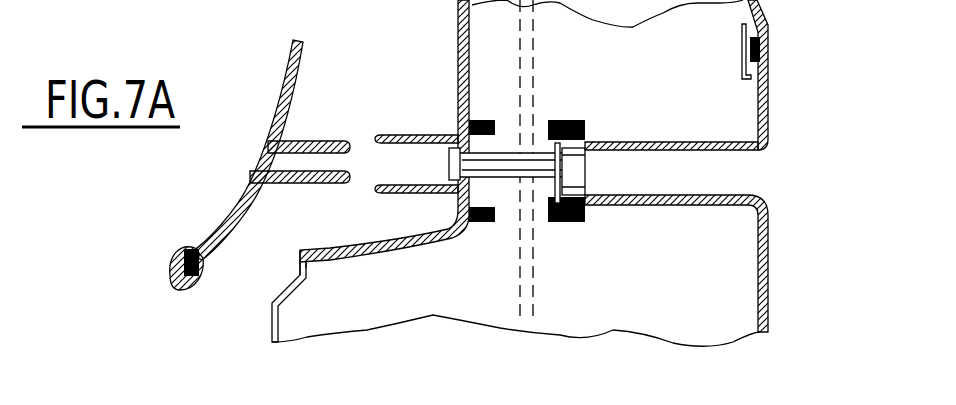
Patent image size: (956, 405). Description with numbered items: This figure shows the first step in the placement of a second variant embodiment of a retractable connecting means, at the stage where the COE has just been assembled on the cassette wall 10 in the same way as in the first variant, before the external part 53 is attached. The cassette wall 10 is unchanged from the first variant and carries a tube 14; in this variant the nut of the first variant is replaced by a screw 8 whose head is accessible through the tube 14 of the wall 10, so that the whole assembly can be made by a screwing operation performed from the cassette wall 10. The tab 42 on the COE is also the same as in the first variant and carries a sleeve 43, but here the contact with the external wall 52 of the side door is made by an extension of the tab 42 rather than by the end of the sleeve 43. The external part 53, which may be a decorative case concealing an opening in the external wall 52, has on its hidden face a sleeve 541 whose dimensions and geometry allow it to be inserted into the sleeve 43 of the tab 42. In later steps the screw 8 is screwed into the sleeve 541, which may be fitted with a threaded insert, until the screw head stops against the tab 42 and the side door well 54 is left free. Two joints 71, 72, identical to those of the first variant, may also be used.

The screw 8 is at (510, 167).
The cassette wall 10 is at (770, 118).
The tube 14 is at (700, 142).
The tab 42 is at (458, 48).
The sleeve 43 is at (425, 138).
The external wall 52 is at (273, 333).
The external part 53 is at (276, 104).
The well 54 is at (670, 68).
The joint 71 is at (575, 223).
The joint 72 is at (487, 222).
The sleeve of the external part 541 is at (305, 184).